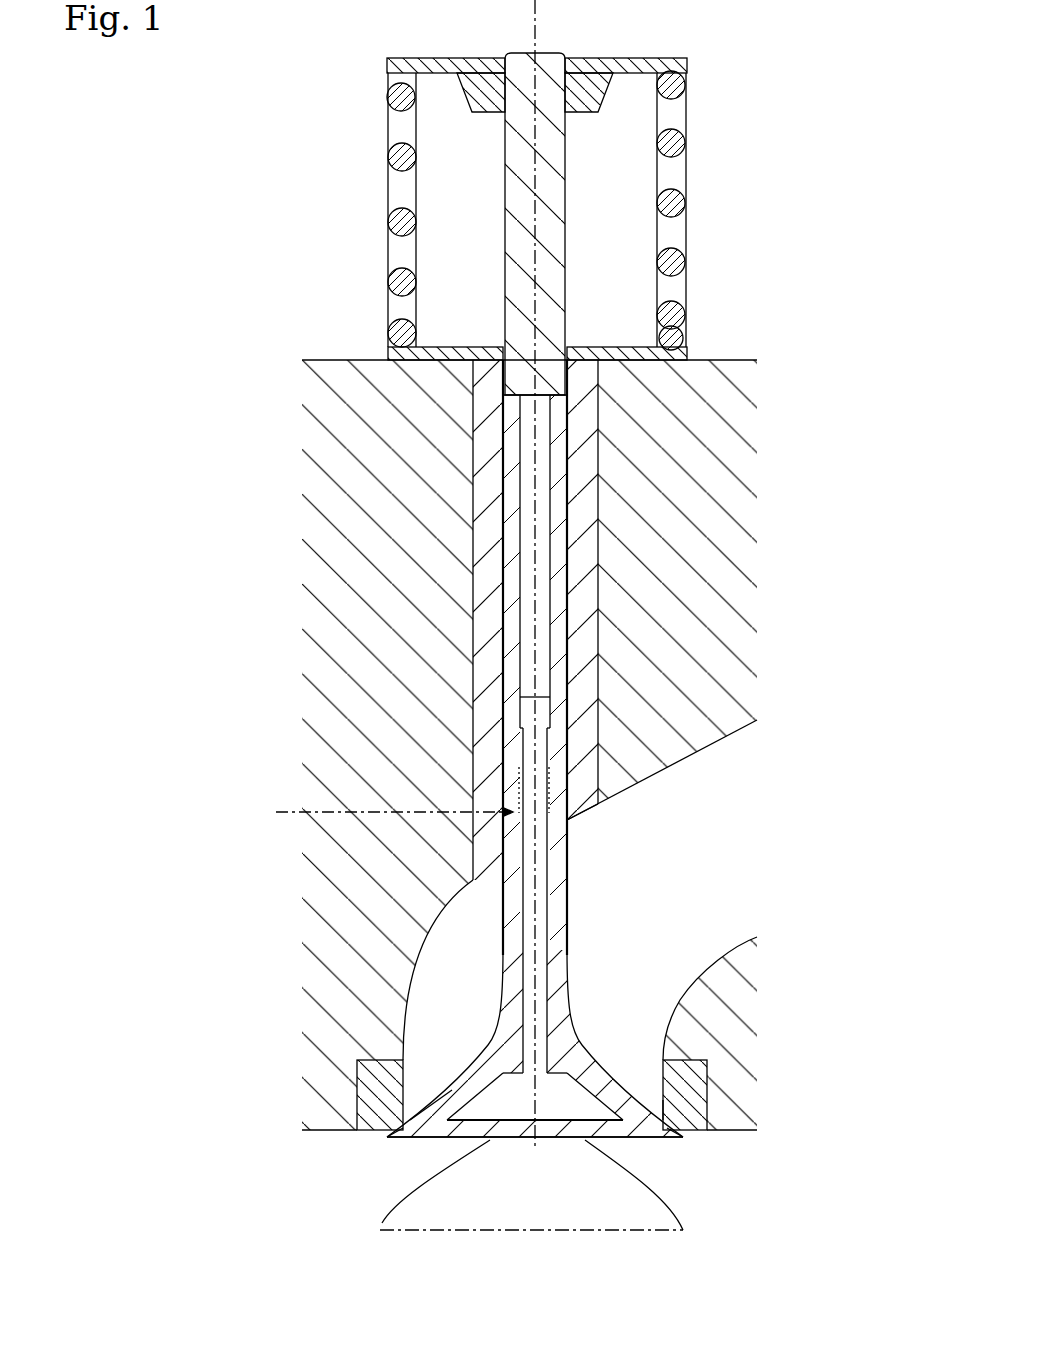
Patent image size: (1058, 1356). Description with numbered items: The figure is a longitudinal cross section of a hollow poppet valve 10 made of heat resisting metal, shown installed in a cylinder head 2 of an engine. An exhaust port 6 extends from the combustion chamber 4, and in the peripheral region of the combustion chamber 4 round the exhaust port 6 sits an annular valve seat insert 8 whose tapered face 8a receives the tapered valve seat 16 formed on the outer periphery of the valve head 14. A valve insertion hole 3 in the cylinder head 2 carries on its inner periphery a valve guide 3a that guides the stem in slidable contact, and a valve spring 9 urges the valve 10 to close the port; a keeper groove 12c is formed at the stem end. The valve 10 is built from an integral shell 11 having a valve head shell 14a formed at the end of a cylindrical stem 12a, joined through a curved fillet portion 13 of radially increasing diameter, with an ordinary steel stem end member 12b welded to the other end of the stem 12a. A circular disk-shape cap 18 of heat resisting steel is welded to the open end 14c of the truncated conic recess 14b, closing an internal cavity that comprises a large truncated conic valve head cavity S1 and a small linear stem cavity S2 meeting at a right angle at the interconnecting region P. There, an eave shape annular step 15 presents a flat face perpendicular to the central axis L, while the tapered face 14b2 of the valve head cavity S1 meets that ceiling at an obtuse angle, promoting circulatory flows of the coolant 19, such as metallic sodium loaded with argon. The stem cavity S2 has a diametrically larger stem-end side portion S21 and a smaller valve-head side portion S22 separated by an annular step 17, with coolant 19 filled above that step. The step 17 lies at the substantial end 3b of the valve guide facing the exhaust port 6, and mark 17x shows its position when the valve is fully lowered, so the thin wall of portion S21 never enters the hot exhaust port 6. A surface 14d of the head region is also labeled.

The cylinder head 2 is at (684, 452).
The valve insertion hole 3 is at (638, 620).
The valve guide 3a is at (599, 558).
The substantial end of the valve guide 3b is at (568, 822).
The combustion chamber 4 is at (743, 1210).
The exhaust port 6 is at (651, 911).
The annular valve seat insert 8 is at (532, 1128).
The tapered face 8a is at (690, 1108).
The valve spring 9 is at (389, 187).
The hollow poppet valve 10 is at (475, 651).
The integral shell 11 is at (418, 1081).
The cylindrical stem 12a is at (527, 716).
The stem end member 12b is at (503, 303).
The keeper groove 12c is at (592, 62).
The curved fillet portion 13 is at (472, 1065).
The valve head 14 is at (441, 1150).
The valve head shell 14a is at (457, 1150).
The truncated conic recess 14b is at (427, 1150).
The tapered face 14b2 is at (482, 1092).
The open end 14c is at (488, 1140).
The cap outer peripheral surface 14d is at (440, 1105).
The eave shape annular step 15 is at (545, 1120).
The tapered valve seat 16 is at (670, 1106).
The annular step 17 is at (517, 699).
The position of the annular step when the valve is fully opened 17x is at (372, 807).
The circular disk-shape cap 18 is at (565, 1120).
The coolant 19 is at (553, 700).
The central axis L is at (538, 45).
The interconnecting region P is at (535, 1125).
The valve head cavity S1 is at (566, 1083).
The stem cavity S2 is at (687, 734).
The stem-end side portion S21 is at (542, 486).
The valve-head side portion S22 is at (545, 935).